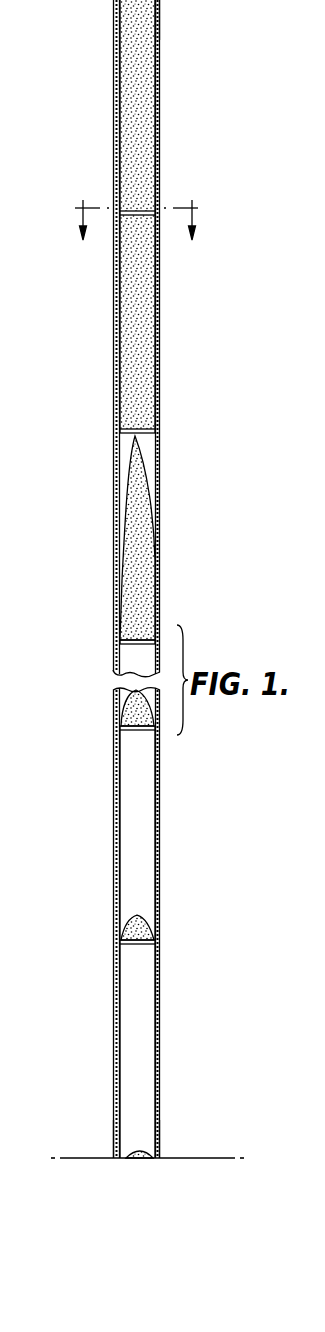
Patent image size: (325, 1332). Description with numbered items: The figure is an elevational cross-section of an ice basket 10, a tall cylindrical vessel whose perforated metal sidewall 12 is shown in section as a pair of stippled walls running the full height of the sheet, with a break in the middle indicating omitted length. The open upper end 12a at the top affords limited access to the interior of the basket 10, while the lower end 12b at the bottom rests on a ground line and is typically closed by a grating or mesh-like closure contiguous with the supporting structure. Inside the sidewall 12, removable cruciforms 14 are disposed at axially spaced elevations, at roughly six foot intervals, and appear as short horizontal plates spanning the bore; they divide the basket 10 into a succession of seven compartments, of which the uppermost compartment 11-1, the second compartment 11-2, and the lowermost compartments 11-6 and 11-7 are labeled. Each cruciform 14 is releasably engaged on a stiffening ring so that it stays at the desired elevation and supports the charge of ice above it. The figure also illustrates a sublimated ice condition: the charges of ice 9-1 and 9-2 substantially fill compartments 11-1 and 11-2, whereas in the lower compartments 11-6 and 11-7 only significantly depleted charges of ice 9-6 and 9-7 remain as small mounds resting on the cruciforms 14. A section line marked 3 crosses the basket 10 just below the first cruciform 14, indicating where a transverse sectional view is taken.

The ice basket 10 is at (143, 583).
The sidewall 12 is at (164, 583).
The upper end 12a is at (186, 20).
The lower end 12b is at (160, 1160).
The removable cruciforms 14 is at (146, 216).
The charge of ice 9-1 is at (147, 50).
The charge of ice 9-2 is at (128, 283).
The charge of ice 9-6 is at (143, 921).
The charge of ice 9-7 is at (138, 1148).
The compartment 11-1 is at (171, 105).
The compartment 11-2 is at (133, 322).
The compartment 11-6 is at (166, 835).
The compartment 11-7 is at (130, 1051).
The section line 3- 3 is at (137, 224).